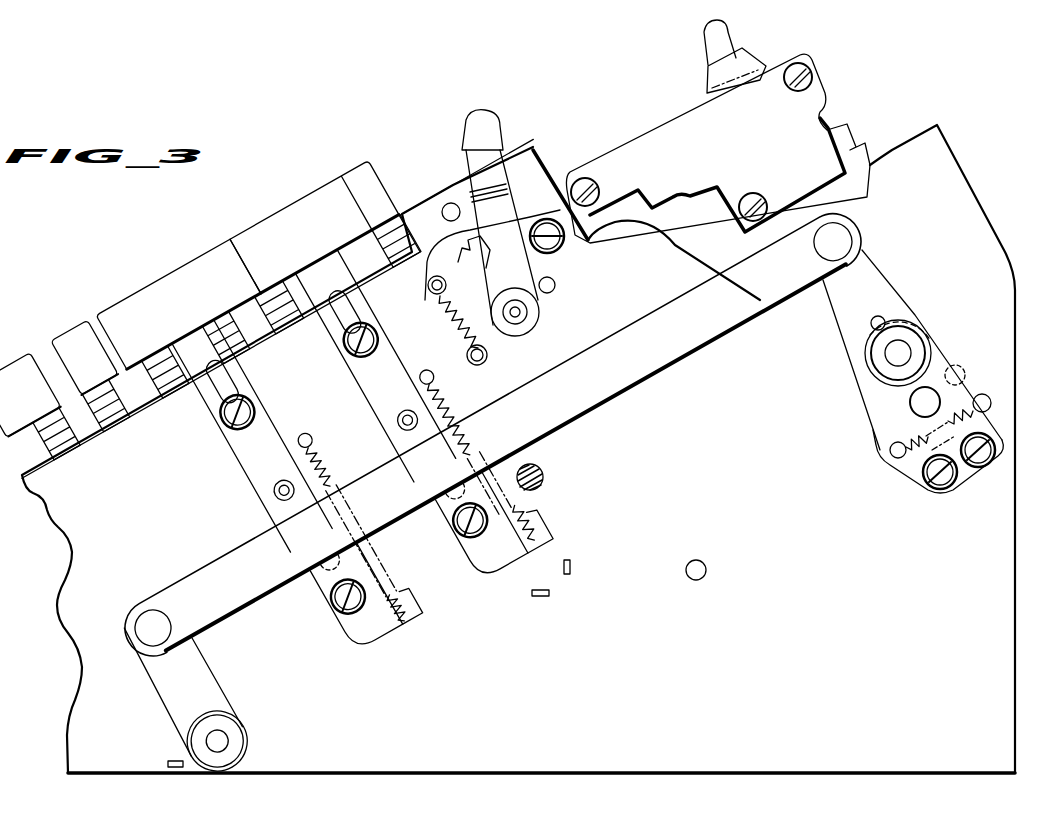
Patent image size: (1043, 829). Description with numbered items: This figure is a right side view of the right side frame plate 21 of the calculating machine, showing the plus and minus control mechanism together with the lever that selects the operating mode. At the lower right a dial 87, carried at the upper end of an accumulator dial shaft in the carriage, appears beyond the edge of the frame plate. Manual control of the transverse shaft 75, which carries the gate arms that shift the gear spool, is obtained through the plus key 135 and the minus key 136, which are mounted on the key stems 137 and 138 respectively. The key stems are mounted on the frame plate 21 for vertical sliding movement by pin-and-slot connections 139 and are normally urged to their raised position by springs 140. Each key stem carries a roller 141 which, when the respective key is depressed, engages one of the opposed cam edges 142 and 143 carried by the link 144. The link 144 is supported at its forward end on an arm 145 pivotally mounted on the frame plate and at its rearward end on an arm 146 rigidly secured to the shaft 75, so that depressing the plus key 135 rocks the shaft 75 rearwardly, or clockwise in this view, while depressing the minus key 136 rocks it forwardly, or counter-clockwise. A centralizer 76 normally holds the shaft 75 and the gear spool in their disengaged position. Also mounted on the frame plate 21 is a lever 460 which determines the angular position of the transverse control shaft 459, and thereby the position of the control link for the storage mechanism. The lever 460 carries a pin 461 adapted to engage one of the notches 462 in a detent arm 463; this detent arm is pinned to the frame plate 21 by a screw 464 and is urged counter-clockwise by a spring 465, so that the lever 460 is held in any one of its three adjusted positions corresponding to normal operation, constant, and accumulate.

The right side frame plate 21 is at (853, 652).
The transverse shaft 75 is at (900, 353).
The centralizer 76 is at (970, 480).
The dial 87 is at (708, 78).
The plus key 135 is at (141, 357).
The minus key 136 is at (322, 247).
The key stem 137 is at (252, 436).
The key stem 138 is at (375, 366).
The pin-and-slot connection 139 is at (237, 412).
The spring 140 is at (465, 468).
The roller 141 is at (283, 490).
The cam edge 142 is at (336, 538).
The cam edge 143 is at (407, 420).
The link 144 is at (493, 435).
The arm 145 is at (189, 691).
The arm 146 is at (876, 276).
The transverse control shaft 459 is at (530, 313).
The lever 460 is at (500, 198).
The pin 461 is at (485, 310).
The notch 462 is at (458, 290).
The detent arm 463 is at (450, 262).
The screw 464 is at (553, 248).
The spring 465 is at (484, 343).